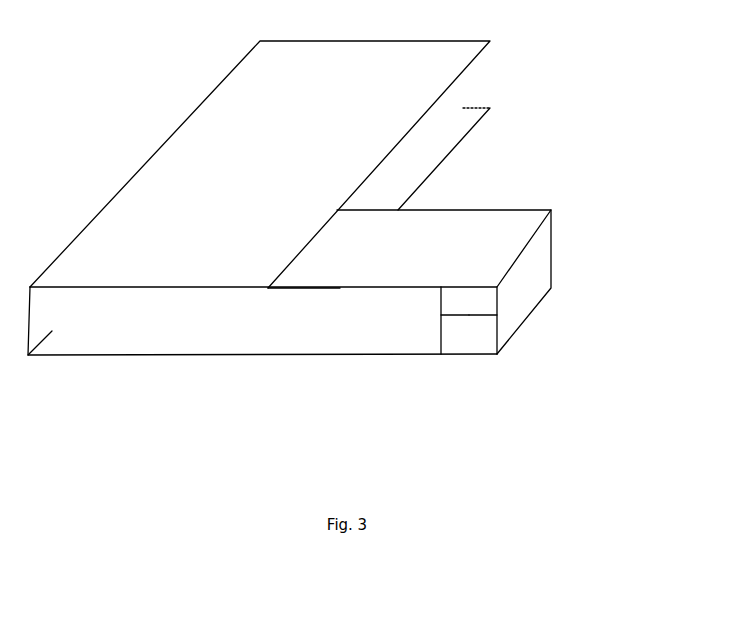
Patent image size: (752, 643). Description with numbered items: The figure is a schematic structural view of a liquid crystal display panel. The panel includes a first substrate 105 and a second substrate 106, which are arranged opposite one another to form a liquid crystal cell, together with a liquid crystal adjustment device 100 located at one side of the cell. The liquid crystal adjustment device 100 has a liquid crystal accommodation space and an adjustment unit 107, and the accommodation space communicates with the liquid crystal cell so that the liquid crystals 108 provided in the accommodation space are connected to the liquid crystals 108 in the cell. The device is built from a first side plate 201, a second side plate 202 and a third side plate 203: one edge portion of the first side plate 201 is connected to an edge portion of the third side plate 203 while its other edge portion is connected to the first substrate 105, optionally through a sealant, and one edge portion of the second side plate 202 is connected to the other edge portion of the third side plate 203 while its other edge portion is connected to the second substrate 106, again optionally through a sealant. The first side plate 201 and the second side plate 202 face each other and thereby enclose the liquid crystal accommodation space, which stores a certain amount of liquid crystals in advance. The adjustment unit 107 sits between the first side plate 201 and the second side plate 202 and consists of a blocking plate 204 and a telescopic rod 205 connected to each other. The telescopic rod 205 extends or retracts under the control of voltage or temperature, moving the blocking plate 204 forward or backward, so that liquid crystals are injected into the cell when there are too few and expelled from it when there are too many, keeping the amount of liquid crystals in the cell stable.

The liquid crystal adjustment device 100 is at (487, 248).
The first substrate 105 is at (240, 140).
The second substrate 106 is at (470, 115).
The adjustment unit 107 is at (471, 315).
The liquid crystals 108 is at (118, 318).
The first side plate 201 is at (318, 263).
The second side plate 202 is at (459, 337).
The third side plate 203 is at (518, 307).
The blocking plate 204 is at (441, 334).
The telescopic rod 205 is at (481, 315).